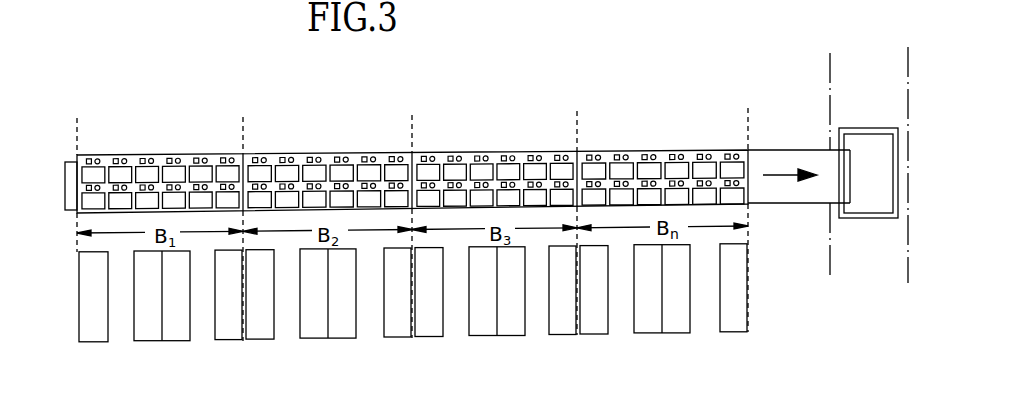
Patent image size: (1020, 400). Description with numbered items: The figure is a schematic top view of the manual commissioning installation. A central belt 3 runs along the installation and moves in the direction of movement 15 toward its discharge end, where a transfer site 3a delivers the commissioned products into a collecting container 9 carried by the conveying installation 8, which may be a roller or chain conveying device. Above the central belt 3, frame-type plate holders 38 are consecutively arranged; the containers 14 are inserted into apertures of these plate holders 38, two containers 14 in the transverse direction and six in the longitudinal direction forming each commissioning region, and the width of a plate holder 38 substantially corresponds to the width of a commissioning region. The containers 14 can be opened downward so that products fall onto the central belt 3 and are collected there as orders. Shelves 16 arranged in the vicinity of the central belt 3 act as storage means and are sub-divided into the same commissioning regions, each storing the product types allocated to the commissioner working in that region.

The central belt 3 is at (767, 183).
The transfer site 3a is at (852, 180).
The conveying installation 8 is at (828, 114).
The collecting container 9 is at (865, 143).
The container 14 is at (395, 168).
The direction of movement of the central belt 15 is at (784, 172).
The shelf 16 is at (98, 325).
The frame-type plate holder 38 is at (160, 162).